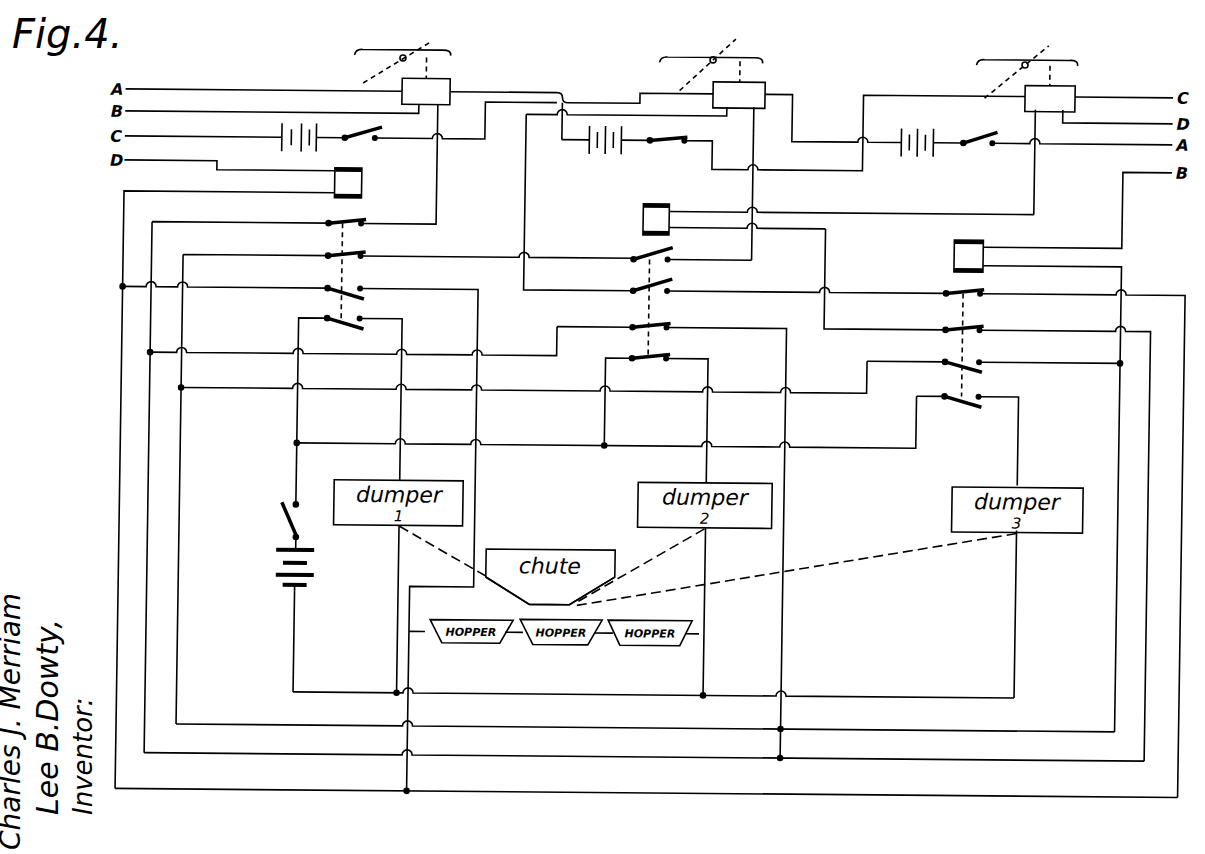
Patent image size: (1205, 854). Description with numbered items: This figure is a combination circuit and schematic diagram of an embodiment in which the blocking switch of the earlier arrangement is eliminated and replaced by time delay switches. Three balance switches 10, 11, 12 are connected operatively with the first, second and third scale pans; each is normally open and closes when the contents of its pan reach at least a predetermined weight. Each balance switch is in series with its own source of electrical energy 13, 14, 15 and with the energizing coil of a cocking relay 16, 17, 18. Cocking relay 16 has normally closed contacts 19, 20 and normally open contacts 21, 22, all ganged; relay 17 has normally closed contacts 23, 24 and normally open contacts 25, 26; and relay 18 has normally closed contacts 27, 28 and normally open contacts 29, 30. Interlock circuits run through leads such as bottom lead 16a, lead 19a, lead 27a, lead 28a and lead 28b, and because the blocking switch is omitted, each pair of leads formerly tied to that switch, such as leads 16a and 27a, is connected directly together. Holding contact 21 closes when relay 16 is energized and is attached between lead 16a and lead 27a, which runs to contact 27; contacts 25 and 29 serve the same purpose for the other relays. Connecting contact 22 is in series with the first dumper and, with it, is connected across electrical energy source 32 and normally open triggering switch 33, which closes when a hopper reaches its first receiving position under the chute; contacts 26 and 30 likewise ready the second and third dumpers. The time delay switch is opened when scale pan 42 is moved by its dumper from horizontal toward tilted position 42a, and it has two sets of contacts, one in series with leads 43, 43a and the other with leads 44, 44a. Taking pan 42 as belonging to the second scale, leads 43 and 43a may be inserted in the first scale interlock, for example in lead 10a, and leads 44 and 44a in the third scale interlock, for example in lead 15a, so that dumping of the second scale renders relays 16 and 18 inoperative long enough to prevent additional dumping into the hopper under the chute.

The balance switch 10 is at (372, 143).
The lead 10a is at (524, 182).
The balance switch 11 is at (680, 145).
The balance switch 12 is at (989, 144).
The source of electrical energy 13 is at (281, 146).
The source of electrical energy 14 is at (585, 150).
The source of electrical energy 15 is at (913, 158).
The lead 15a is at (749, 200).
The cocking relay 16 is at (360, 182).
The bottom lead 16a is at (203, 194).
The cocking relay 17 is at (639, 220).
The cocking relay 18 is at (950, 255).
The normally closed contact 19 is at (362, 231).
The lead 19a is at (212, 228).
The normally closed contact 20 is at (366, 262).
The normally open contact 21 is at (364, 294).
The normally open contact 22 is at (362, 323).
The normally closed contact 23 is at (670, 263).
The normally closed contact 24 is at (670, 294).
The normally open contact 25 is at (672, 330).
The normally open contact 26 is at (667, 362).
The normally closed contact 27 is at (982, 296).
The lead 27a is at (494, 796).
The normally closed contact 28 is at (984, 331).
The lead 28a is at (665, 757).
The conductor 28b is at (824, 334).
The normally open contact 29 is at (983, 364).
The normally open contact 30 is at (984, 398).
The electrical energy source 32 is at (276, 580).
The triggering switch 33 is at (296, 504).
The scale pan 42 is at (447, 55).
The tilted position 42a is at (415, 44).
The leads 43 is at (637, 98).
The lead 43a is at (693, 119).
The leads 44 is at (790, 104).
The lead 44a is at (756, 151).